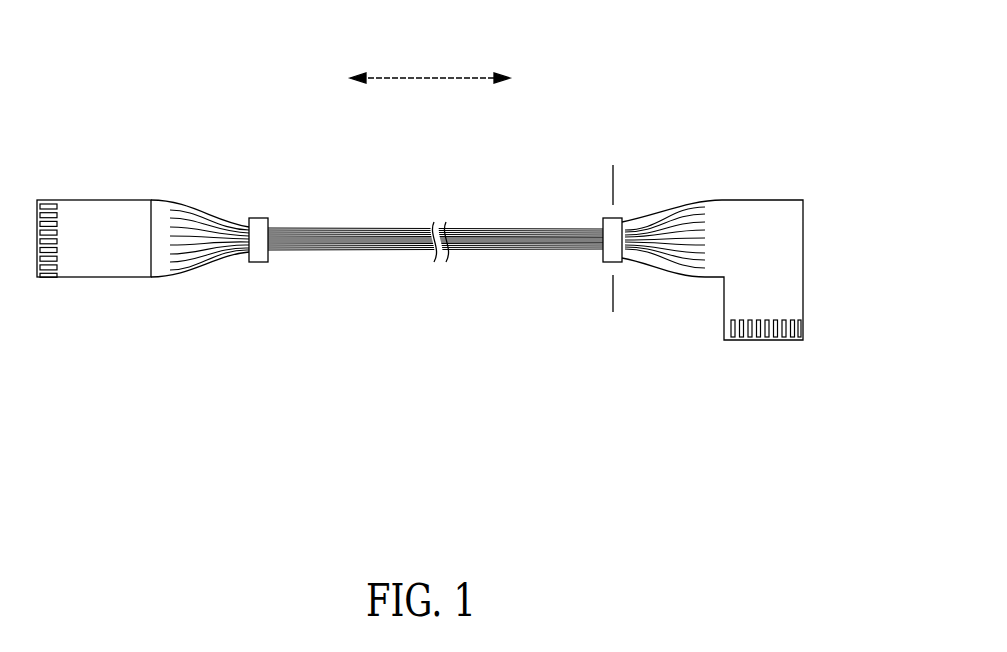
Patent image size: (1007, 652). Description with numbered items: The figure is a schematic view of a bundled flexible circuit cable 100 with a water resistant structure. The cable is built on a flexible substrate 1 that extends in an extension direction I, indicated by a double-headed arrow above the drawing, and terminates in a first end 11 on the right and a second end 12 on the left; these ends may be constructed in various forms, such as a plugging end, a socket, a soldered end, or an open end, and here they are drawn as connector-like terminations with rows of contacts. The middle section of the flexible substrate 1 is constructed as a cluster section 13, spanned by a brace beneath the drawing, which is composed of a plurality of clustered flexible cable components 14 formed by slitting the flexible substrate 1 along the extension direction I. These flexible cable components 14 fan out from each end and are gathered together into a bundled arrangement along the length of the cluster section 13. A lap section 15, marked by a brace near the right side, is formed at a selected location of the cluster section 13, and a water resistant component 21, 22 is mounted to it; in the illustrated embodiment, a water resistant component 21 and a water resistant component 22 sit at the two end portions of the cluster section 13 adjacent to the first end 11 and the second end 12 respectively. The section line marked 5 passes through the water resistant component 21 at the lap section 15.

The bundled flexible circuit cable 100 is at (449, 220).
The flexible substrate 1 is at (741, 244).
The first end 11 is at (797, 238).
The second end 12 is at (108, 273).
The cluster section 13 is at (180, 364).
The flexible cable components 14 is at (670, 222).
The lap section 15 is at (562, 143).
The water resistant component 21 is at (618, 260).
The water resistant component 22 is at (259, 262).
The section line of FIG. 5 is at (612, 190).
The extension direction I is at (428, 77).